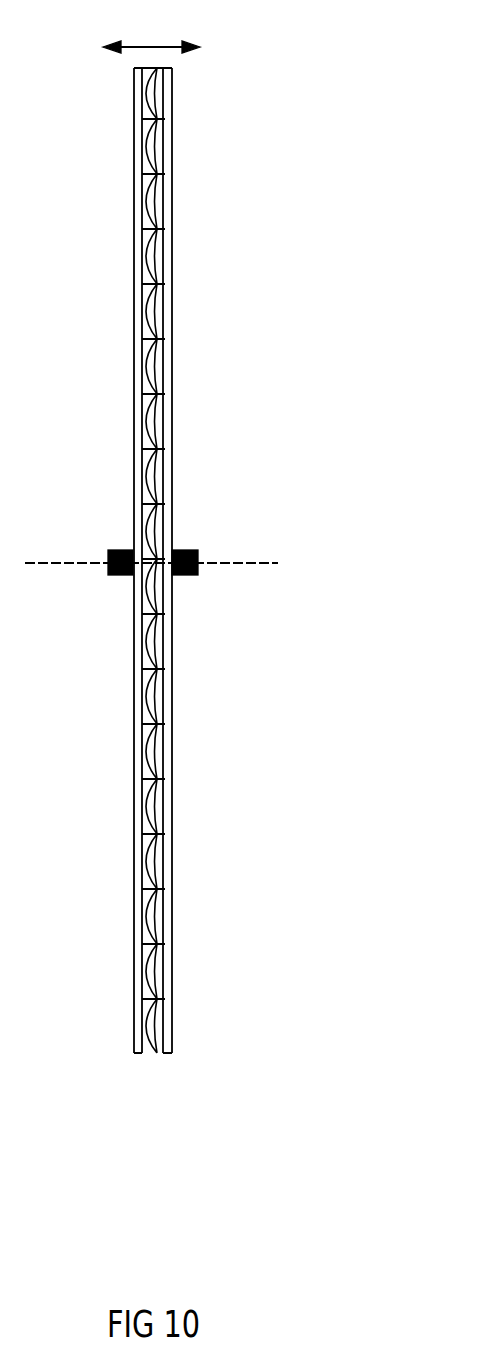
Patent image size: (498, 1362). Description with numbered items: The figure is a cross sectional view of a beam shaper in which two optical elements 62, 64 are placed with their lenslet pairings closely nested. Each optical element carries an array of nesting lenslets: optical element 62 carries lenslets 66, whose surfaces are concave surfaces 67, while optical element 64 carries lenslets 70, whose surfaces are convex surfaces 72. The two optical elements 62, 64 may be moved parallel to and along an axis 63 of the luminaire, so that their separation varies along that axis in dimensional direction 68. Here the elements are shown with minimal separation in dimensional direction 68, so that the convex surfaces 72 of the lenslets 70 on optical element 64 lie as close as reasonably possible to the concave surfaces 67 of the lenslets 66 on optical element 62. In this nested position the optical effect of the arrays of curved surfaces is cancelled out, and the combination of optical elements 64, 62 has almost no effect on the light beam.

The optical element 62 is at (172, 1058).
The axis 63 is at (202, 562).
The optical element 64 is at (137, 1058).
The lenslets 66 is at (164, 937).
The concave surfaces 67 is at (166, 901).
The dimensional direction 68 is at (151, 34).
The lenslets 70 is at (148, 927).
The convex surfaces 72 is at (142, 899).